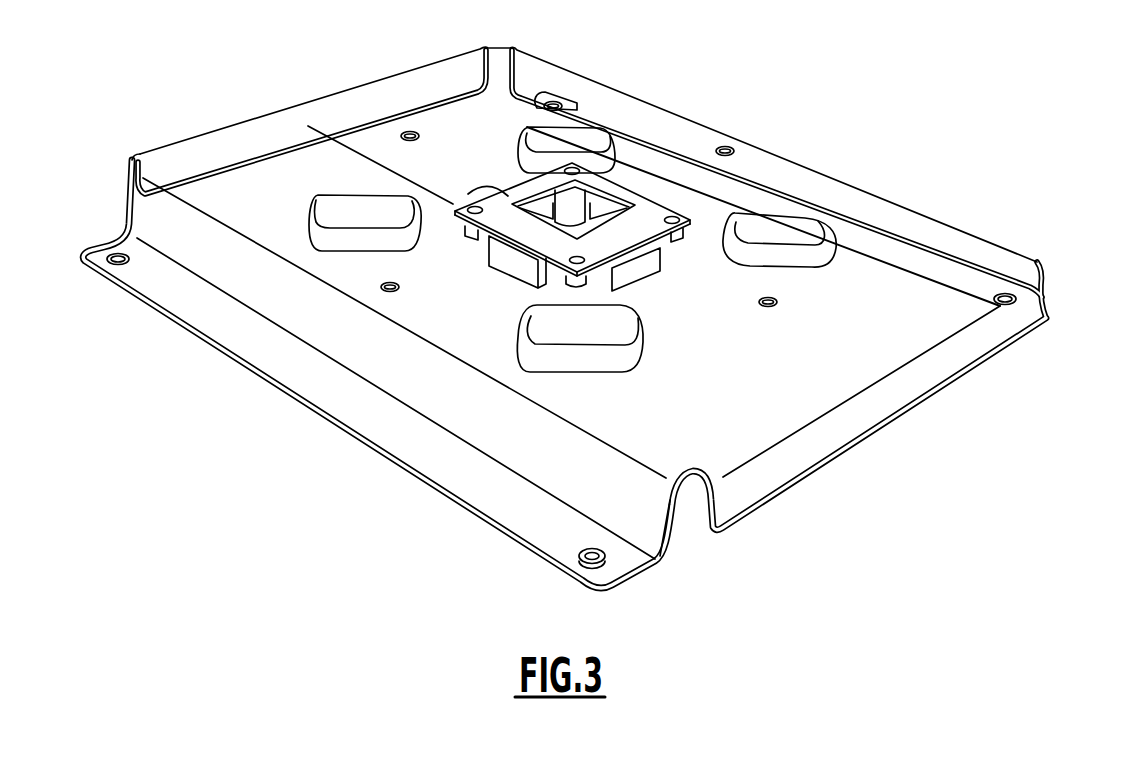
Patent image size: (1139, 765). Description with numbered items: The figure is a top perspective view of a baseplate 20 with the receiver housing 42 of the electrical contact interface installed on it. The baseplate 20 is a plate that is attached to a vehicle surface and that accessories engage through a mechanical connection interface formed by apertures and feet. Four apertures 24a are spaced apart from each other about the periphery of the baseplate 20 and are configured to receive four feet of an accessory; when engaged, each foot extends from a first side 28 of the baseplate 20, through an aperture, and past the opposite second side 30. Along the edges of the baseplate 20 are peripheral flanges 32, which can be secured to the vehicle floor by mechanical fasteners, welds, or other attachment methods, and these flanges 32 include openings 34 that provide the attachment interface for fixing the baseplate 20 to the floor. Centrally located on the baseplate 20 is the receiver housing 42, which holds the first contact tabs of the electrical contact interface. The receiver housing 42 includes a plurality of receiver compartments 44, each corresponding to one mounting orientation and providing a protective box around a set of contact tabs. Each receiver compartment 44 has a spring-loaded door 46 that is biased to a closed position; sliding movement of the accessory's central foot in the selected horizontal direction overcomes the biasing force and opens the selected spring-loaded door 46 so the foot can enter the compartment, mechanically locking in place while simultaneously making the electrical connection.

The baseplate 20 is at (204, 192).
The apertures 24a is at (340, 212).
The first side 28 is at (905, 260).
The second side 30 is at (688, 482).
The peripheral flanges 32 is at (203, 316).
The openings 34 is at (113, 266).
The receiver housing 42 is at (653, 197).
The receiver compartments 44 is at (506, 274).
The spring-loaded door 46 is at (545, 215).